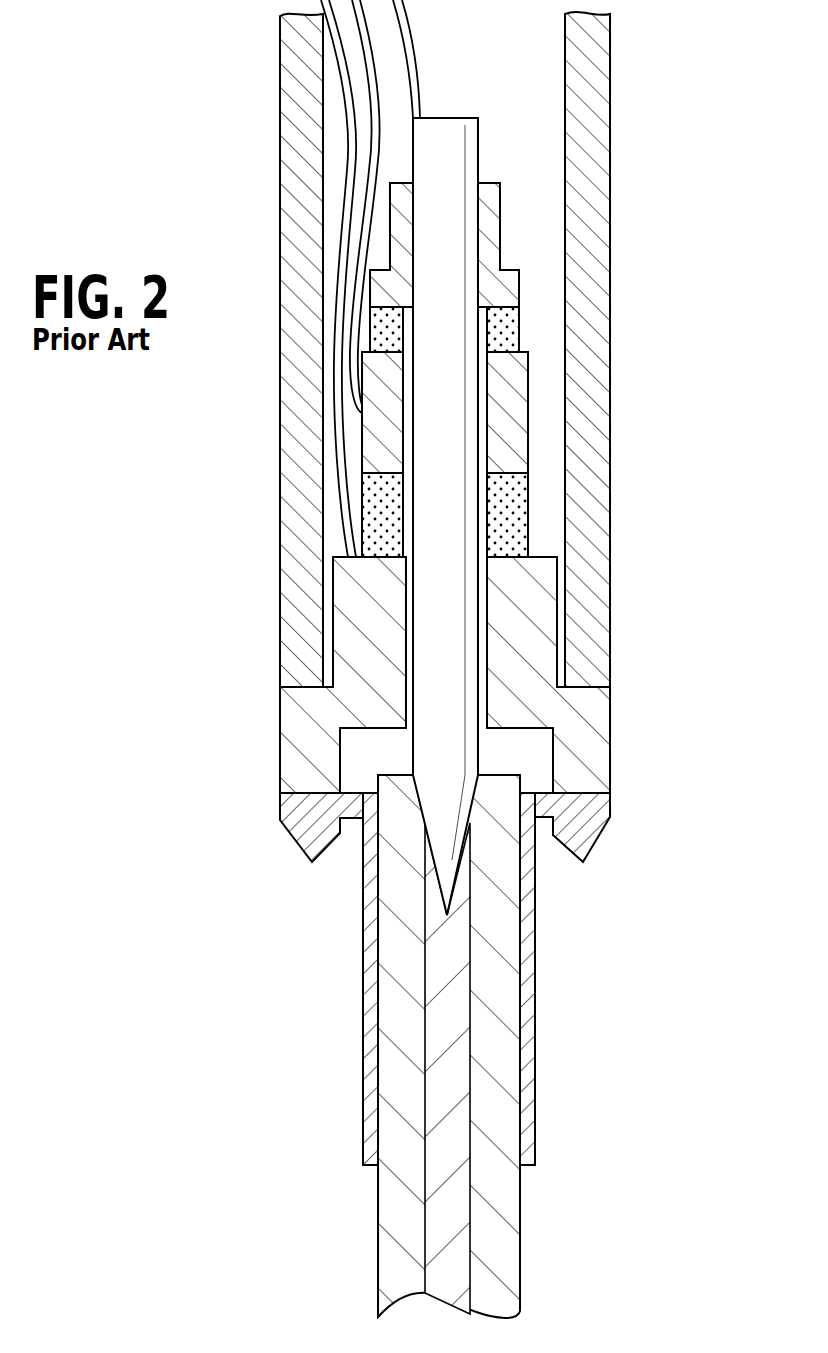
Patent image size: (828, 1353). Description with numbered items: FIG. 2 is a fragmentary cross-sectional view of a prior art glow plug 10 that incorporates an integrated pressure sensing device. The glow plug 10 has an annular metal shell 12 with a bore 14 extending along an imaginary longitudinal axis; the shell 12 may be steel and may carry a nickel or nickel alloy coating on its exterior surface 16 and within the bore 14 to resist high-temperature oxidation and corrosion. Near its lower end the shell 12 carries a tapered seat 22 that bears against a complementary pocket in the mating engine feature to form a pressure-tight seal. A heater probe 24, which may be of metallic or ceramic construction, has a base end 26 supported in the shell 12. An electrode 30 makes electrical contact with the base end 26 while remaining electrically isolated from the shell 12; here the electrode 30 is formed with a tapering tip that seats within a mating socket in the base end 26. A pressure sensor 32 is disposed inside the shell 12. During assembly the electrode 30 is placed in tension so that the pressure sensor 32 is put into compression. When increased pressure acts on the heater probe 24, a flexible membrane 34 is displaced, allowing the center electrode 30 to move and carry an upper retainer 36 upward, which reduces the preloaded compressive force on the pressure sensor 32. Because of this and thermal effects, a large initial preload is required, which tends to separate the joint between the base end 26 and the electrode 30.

The glow plug 10 is at (655, 60).
The annular metal shell 12 is at (614, 470).
The bore 14 is at (565, 57).
The exterior surface 16 is at (280, 483).
The tapered seat 22 is at (303, 853).
The heater probe 24 is at (532, 1247).
The base end 26 is at (507, 777).
The electrode 30 is at (467, 147).
The pressure sensor 32 is at (529, 394).
The flexible membrane 34 is at (355, 820).
The upper retainer 36 is at (500, 231).